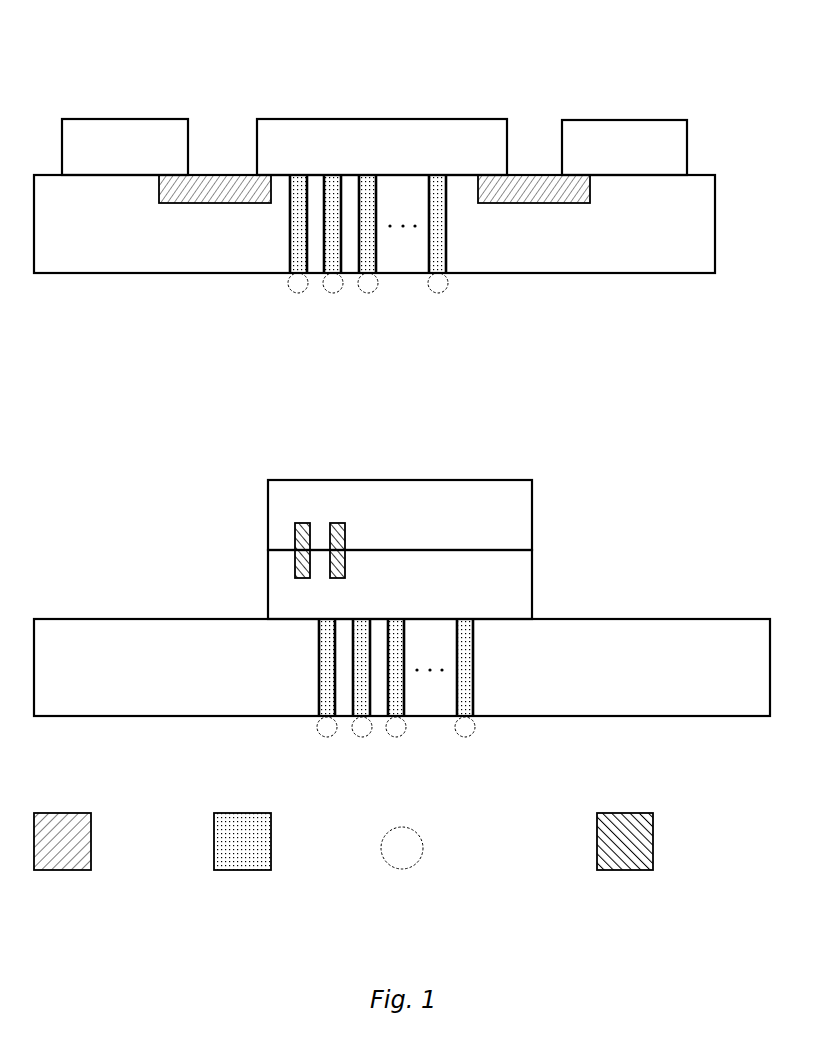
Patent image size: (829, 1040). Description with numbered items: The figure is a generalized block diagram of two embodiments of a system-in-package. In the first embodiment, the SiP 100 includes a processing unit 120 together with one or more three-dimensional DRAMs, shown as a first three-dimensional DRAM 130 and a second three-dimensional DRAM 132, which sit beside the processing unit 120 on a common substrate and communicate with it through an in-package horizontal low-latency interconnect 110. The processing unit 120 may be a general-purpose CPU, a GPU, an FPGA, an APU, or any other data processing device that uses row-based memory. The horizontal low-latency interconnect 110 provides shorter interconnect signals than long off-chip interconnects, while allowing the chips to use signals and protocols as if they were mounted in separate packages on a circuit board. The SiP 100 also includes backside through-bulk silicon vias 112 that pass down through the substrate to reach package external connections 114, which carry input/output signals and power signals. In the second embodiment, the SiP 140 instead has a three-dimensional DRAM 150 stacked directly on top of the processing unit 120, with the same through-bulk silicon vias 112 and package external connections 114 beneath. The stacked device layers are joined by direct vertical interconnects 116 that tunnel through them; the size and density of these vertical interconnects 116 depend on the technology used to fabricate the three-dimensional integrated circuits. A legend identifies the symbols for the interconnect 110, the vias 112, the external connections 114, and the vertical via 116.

The system-in-package (SiP) 100 is at (515, 59).
The horizontal low-latency interconnect 110 is at (134, 941).
The through-bulk silicon vias 112 is at (353, 941).
The package external connections 114 is at (488, 945).
The vertical interconnects 116 is at (623, 870).
The processing unit 120 is at (367, 168).
The three-dimensional (3D) DRAM 130 is at (110, 168).
The three-dimensional (3D) DRAM 132 is at (610, 167).
The system-in-package (SiP) 140 is at (516, 427).
The 3D DRAM 150 is at (458, 506).